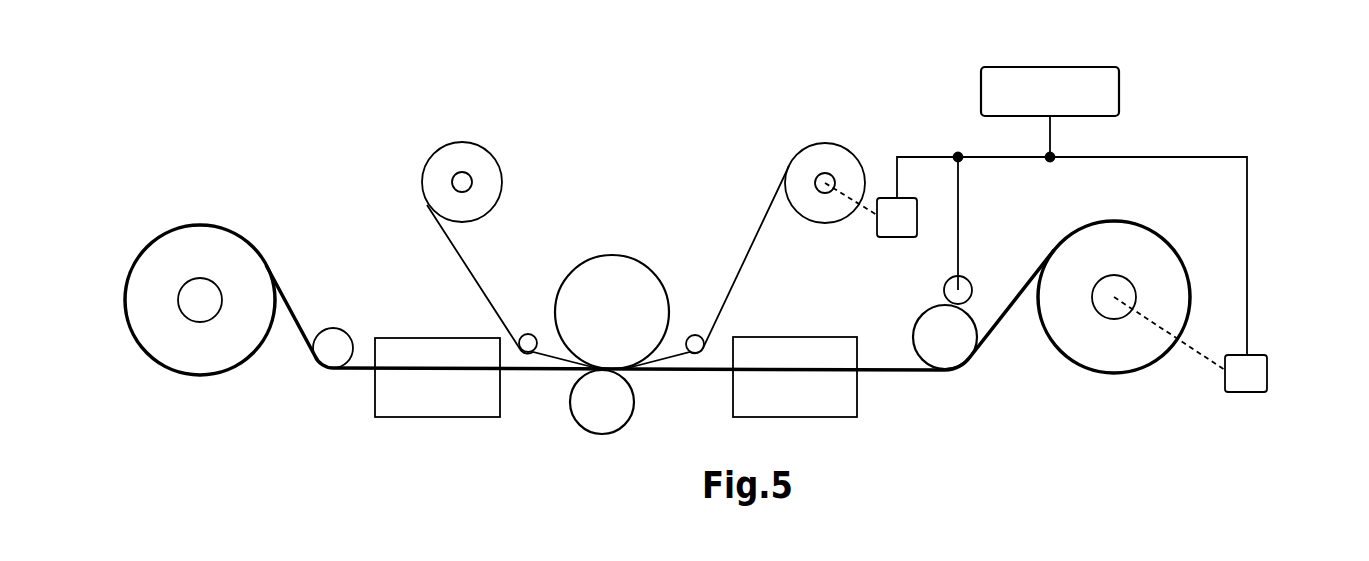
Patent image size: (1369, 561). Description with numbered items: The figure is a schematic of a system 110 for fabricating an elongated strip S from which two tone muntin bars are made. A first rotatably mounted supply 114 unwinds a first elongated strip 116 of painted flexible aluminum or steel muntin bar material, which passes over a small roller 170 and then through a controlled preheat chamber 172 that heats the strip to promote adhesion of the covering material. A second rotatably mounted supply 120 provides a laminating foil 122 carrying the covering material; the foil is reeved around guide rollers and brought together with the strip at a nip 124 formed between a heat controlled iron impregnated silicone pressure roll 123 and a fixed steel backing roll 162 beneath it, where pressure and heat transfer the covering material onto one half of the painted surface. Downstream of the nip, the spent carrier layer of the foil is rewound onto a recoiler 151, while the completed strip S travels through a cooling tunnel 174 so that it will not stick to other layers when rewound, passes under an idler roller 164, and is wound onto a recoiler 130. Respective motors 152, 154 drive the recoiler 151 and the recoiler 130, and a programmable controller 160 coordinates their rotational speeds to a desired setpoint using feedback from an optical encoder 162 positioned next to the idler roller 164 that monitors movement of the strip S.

The system 110 is at (698, 74).
The first rotatably mounted supply 114 is at (168, 234).
The first elongated strip 116 is at (297, 328).
The second rotatably mounted supply 120 is at (477, 162).
The laminating foil 122 is at (480, 278).
The pressure roll 123 is at (633, 277).
The nip 124 is at (558, 381).
The recoiler 130 is at (1115, 357).
The recoiler 151 is at (838, 158).
The motor 152 is at (893, 226).
The motor 154 is at (1252, 370).
The programmable controller 160 is at (1055, 72).
The optical encoder 162 is at (605, 420).
The idler roller 164 is at (947, 352).
The idler roller 170 is at (328, 357).
The controlled preheat chamber 172 is at (440, 405).
The cooling tunnel 174 is at (810, 407).
The elongated strip S is at (1000, 322).